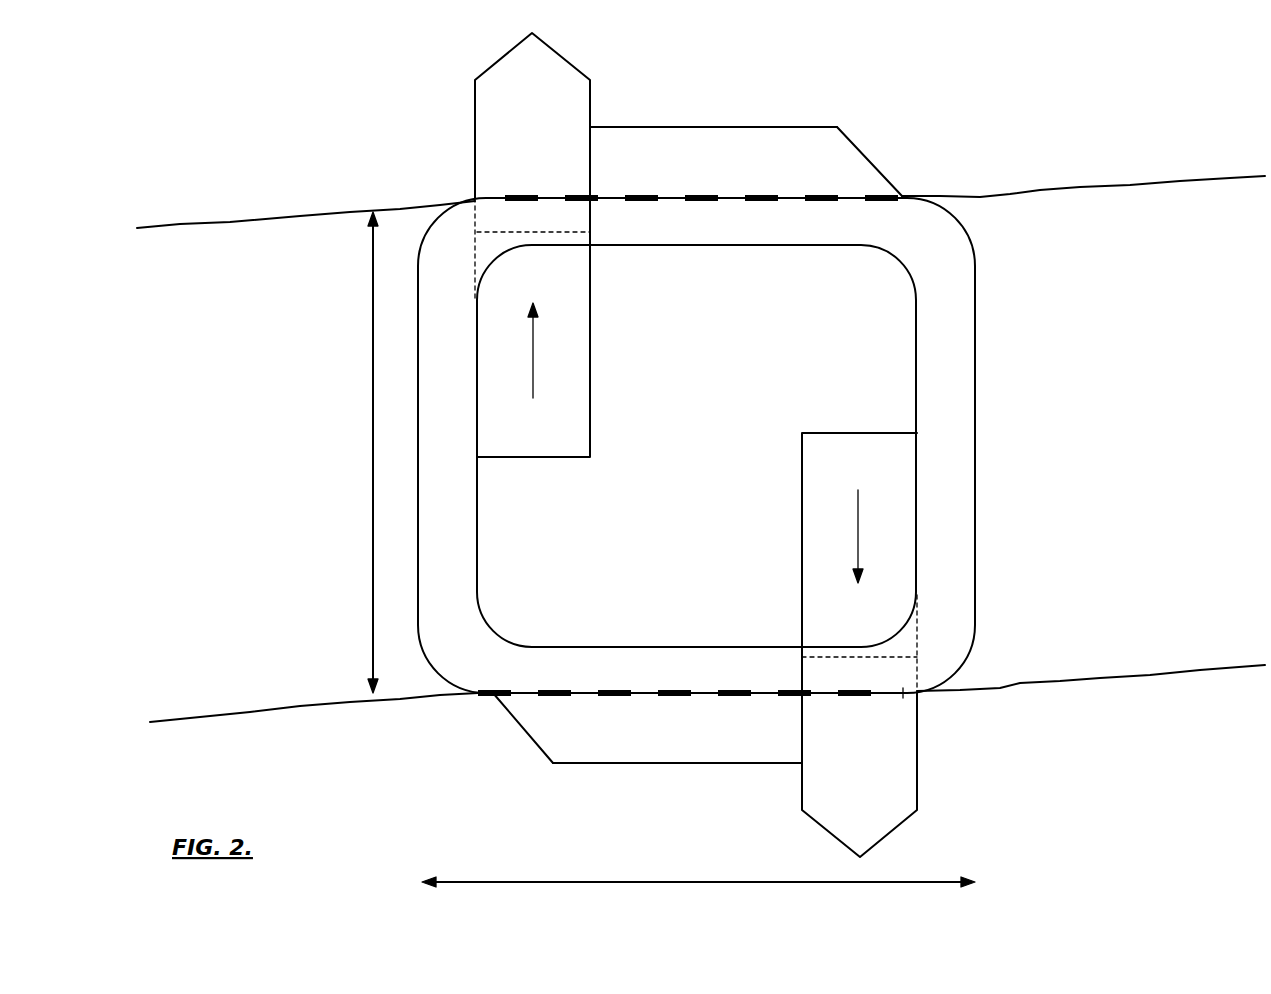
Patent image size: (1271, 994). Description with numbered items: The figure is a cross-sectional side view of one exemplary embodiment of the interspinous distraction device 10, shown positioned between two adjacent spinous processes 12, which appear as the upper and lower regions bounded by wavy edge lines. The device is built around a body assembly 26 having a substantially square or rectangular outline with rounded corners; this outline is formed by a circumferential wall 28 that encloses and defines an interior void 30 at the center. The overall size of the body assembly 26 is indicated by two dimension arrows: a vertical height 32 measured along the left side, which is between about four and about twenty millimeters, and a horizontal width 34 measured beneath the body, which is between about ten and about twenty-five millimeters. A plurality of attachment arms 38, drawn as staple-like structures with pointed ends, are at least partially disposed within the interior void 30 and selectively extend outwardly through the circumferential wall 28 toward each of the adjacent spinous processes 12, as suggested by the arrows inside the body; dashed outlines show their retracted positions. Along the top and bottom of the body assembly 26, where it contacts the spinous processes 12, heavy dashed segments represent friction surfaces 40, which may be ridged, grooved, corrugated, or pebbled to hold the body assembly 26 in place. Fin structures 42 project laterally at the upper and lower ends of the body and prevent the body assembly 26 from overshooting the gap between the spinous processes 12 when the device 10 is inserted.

The interspinous distraction device 10 is at (963, 218).
The spinous processes 12 is at (701, 446).
The body assembly 26 is at (983, 323).
The circumferential wall 28 is at (975, 450).
The interior void 30 is at (700, 450).
The height 32 is at (356, 452).
The width 34 is at (698, 897).
The attachment arms 38 is at (473, 137).
The friction surfaces 40 is at (835, 183).
The fin structures 42 is at (798, 124).